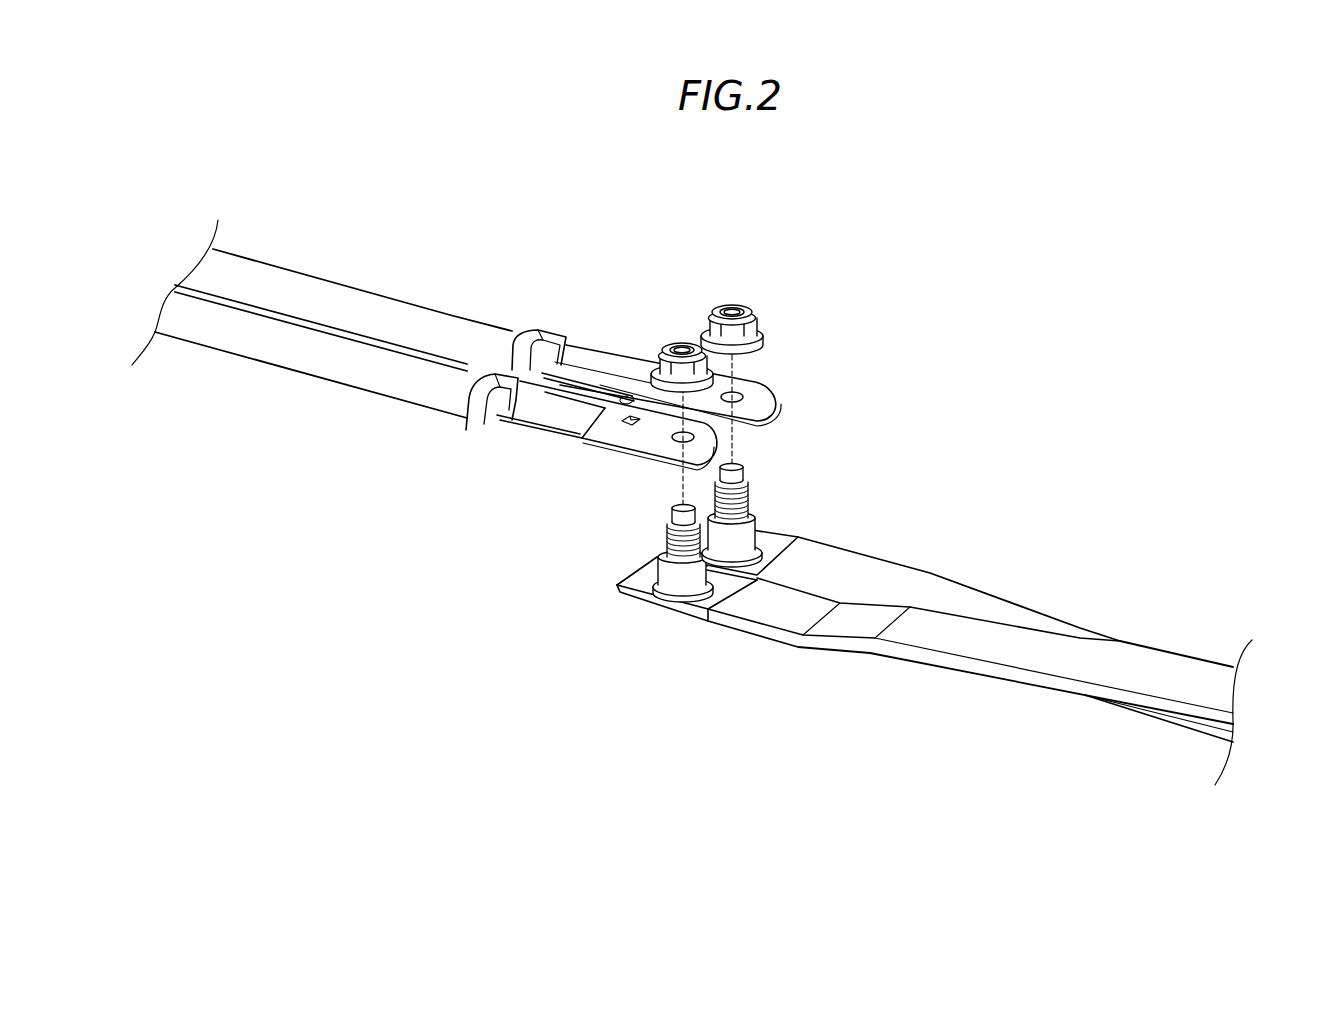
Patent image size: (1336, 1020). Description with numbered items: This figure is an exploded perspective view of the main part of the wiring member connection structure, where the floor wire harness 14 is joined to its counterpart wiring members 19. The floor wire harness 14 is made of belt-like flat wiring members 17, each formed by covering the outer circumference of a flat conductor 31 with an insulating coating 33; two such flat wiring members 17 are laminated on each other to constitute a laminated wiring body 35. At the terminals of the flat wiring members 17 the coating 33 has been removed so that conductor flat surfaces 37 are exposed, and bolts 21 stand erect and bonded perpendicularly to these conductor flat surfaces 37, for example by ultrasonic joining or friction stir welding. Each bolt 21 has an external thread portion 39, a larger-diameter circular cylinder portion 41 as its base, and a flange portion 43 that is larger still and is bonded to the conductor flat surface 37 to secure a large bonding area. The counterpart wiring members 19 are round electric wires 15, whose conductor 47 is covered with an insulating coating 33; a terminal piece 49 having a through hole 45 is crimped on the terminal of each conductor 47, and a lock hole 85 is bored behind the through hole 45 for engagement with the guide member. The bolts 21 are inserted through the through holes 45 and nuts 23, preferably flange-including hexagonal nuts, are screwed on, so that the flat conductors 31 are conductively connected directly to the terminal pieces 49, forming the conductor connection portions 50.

The floor wire harness 14 is at (905, 644).
The round electric wires 15 is at (223, 310).
The flat wiring members 17 is at (1099, 632).
The counterpart wiring members 19 is at (398, 278).
The bolts 21 is at (699, 533).
The nuts 23 is at (674, 339).
The flat conductor 31 is at (620, 596).
The insulating coating 33 is at (191, 325).
The laminated wiring body 35 is at (1202, 742).
The conductor flat surfaces 37 is at (792, 548).
The external thread portion 39 is at (668, 527).
The circular cylinder portion 41 is at (688, 586).
The flange portion 43 is at (652, 571).
The through hole 45 is at (742, 396).
The conductor 47 is at (523, 428).
The terminal piece 49 is at (555, 400).
The conductor connection portions 50 is at (796, 415).
The lock holes 85 is at (630, 418).